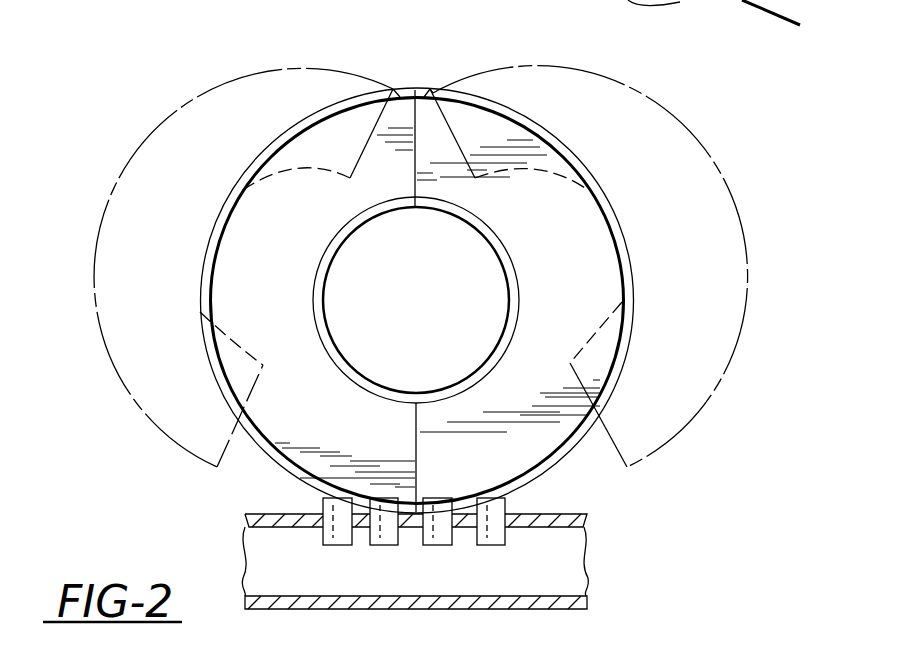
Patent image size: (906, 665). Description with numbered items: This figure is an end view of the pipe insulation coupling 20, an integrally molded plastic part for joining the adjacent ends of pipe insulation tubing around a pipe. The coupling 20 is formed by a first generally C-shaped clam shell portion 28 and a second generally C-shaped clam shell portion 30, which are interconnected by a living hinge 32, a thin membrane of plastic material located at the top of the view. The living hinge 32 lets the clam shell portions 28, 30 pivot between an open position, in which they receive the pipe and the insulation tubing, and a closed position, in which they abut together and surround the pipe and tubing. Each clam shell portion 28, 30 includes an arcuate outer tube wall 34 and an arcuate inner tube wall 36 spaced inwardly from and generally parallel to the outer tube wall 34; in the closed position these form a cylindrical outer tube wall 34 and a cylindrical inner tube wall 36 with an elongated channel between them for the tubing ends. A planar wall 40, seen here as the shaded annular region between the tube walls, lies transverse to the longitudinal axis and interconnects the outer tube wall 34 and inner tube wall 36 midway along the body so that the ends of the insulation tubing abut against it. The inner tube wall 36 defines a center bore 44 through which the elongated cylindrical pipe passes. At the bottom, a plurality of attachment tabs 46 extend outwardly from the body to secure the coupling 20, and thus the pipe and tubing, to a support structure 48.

The pipe insulation coupling 20 is at (131, 120).
The first clam shell portion 28 is at (100, 350).
The second clam shell portion 30 is at (748, 223).
The living hinge 32 is at (418, 92).
The outer tube wall 34 is at (243, 190).
The inner tube wall 36 is at (328, 254).
The planar wall 40 is at (285, 313).
The center bore 44 is at (482, 272).
The attachment tabs 46 is at (378, 575).
The support structure 48 is at (573, 516).